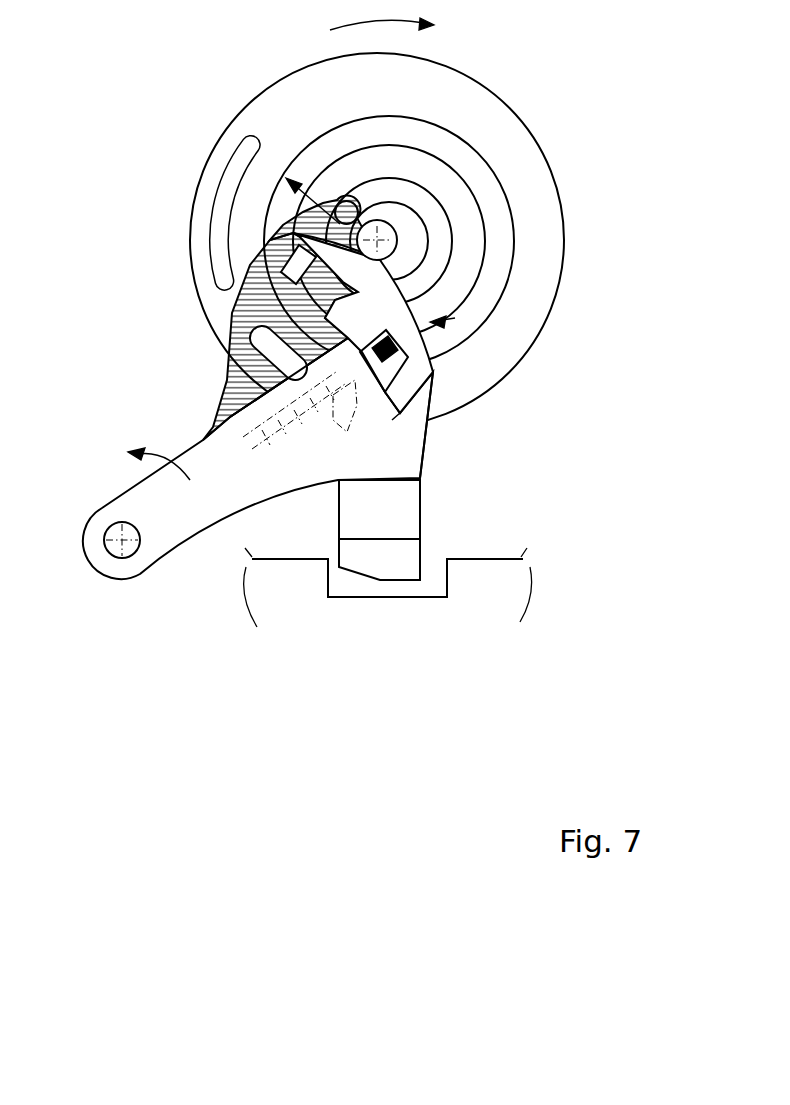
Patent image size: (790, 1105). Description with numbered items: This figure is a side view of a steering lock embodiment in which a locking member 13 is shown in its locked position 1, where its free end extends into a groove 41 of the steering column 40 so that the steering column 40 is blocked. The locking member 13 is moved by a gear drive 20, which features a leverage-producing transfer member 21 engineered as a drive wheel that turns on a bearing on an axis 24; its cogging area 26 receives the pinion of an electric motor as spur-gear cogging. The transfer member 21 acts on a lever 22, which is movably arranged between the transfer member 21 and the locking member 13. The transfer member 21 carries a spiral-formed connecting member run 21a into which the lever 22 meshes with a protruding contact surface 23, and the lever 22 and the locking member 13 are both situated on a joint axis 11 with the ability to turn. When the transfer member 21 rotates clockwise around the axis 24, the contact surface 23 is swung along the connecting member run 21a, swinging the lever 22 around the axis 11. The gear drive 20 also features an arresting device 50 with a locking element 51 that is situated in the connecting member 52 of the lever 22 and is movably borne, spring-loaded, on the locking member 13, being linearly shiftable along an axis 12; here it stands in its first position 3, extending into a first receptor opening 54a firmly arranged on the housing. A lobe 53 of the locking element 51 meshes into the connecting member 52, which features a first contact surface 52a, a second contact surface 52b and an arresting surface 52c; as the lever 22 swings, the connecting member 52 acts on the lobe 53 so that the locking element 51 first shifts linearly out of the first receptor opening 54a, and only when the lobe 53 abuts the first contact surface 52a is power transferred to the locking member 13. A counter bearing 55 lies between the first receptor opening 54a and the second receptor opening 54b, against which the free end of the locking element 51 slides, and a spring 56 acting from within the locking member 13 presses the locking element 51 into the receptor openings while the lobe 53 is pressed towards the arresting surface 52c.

The locked position 1 is at (628, 519).
The first position 3 is at (622, 337).
The joint axis 11 is at (118, 528).
The axis 12 is at (230, 467).
The locking member 13 is at (398, 470).
The gear drive 20 is at (166, 333).
The transfer member 21 is at (525, 148).
The connecting member run 21a is at (302, 236).
The lever 22 is at (228, 375).
The contact surface 23 is at (343, 208).
The axis 24 is at (382, 237).
The cogging area 26 is at (508, 100).
The steering column 40 is at (282, 570).
The groove 41 is at (395, 587).
The arresting device 50 is at (455, 318).
The locking element 51 is at (402, 393).
The connecting member 52 is at (238, 345).
The first contact surface 52a is at (340, 427).
The second contact surface 52b is at (245, 322).
The arresting surface 52c is at (400, 386).
The lobe 53 is at (345, 395).
The first receptor opening 54a is at (400, 352).
The second receptor opening 54b is at (288, 258).
The counter bearing 55 is at (420, 263).
The spring 56 is at (276, 410).